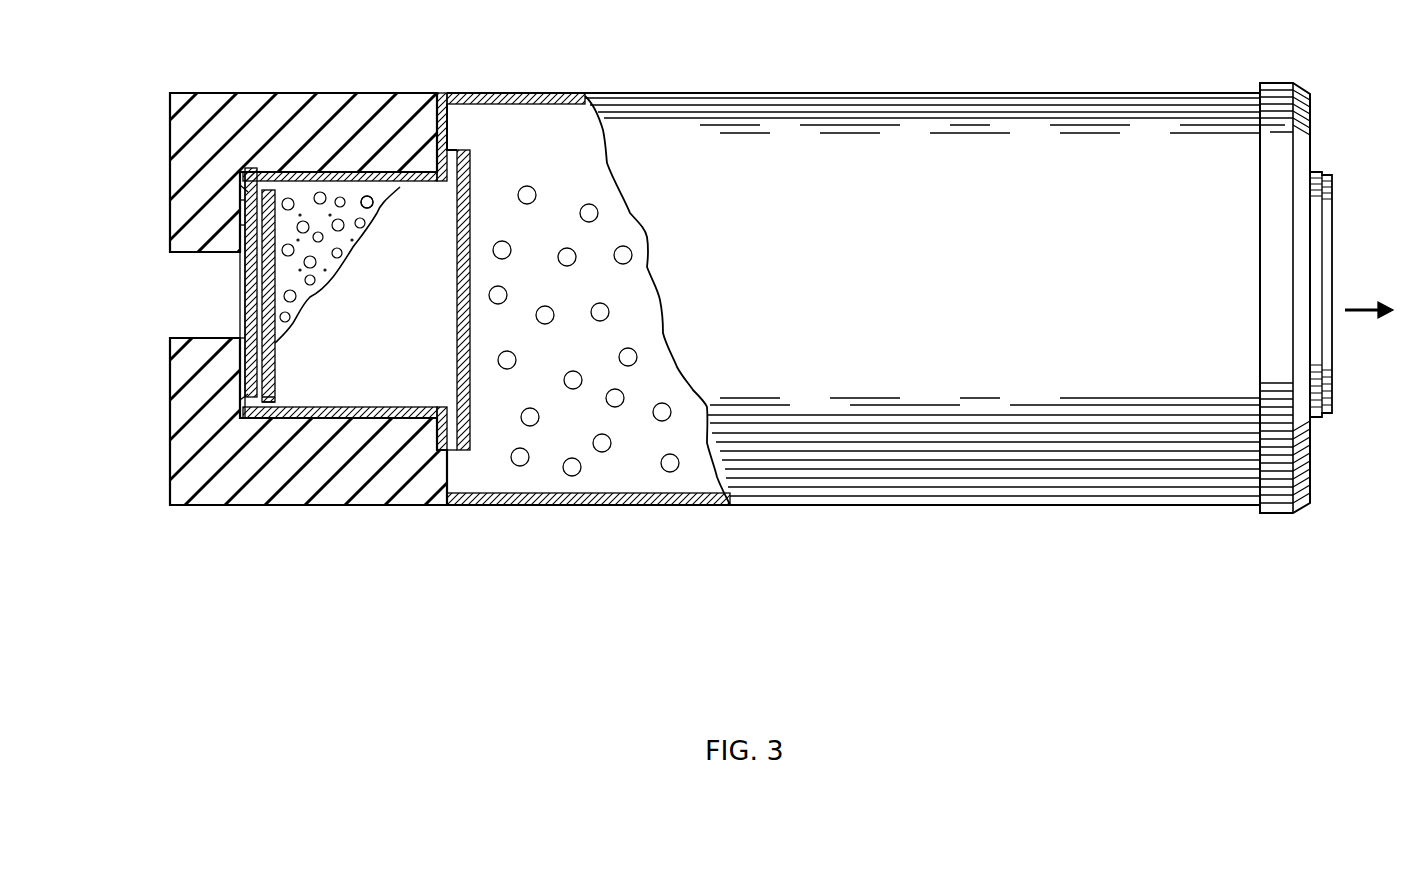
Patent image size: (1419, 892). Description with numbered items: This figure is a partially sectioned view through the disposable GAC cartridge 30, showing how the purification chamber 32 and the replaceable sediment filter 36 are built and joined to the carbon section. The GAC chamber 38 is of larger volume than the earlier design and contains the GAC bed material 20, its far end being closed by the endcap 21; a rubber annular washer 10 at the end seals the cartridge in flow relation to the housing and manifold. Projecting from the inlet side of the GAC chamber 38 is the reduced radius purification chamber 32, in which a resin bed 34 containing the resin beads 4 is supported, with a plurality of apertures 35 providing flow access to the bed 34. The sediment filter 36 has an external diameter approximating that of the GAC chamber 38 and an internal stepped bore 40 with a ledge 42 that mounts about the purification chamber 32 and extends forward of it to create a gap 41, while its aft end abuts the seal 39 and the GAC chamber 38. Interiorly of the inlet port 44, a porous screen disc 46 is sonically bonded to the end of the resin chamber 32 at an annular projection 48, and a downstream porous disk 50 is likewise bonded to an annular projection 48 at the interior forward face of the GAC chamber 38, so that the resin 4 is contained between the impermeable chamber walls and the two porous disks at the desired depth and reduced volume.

The resin beads 4 is at (362, 197).
The rubber annular washer 10 is at (1333, 211).
The GAC bed material 20 is at (518, 466).
The endcap 21 is at (1305, 508).
The disposable GAC cartridge 30 is at (895, 506).
The purification chamber 32 is at (297, 170).
The resin bed 34 is at (417, 313).
The apertures 35 is at (242, 190).
The sediment filter 36 is at (172, 489).
The GAC chamber 38 is at (520, 93).
The seal 39 is at (433, 155).
The stepped bore 40 is at (237, 229).
The gap 41 is at (237, 338).
The ledge 42 is at (236, 203).
The inlet port 44 is at (244, 288).
The screen disc 46 is at (277, 357).
The annular projection 48 is at (268, 383).
The downstream porous disk 50 is at (468, 150).